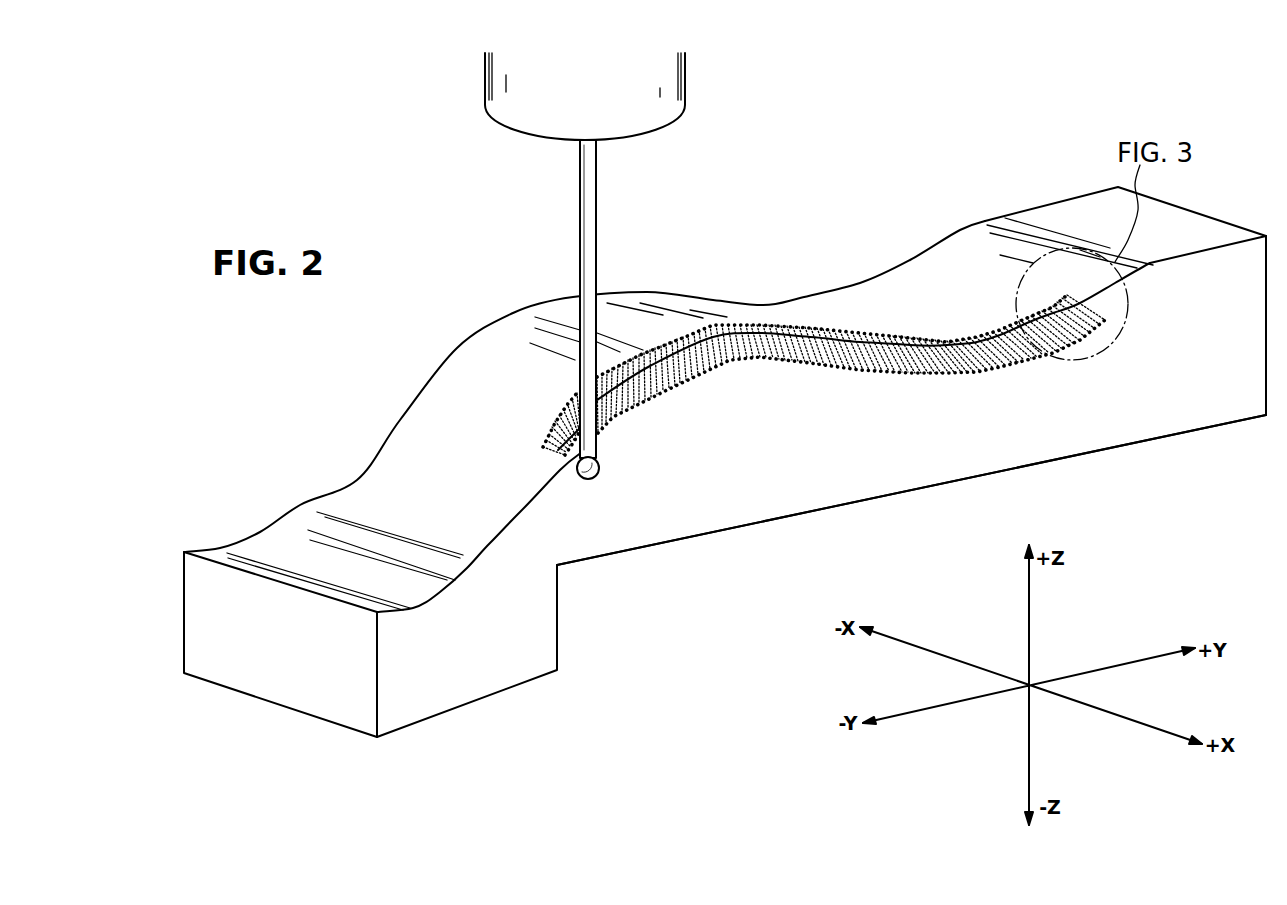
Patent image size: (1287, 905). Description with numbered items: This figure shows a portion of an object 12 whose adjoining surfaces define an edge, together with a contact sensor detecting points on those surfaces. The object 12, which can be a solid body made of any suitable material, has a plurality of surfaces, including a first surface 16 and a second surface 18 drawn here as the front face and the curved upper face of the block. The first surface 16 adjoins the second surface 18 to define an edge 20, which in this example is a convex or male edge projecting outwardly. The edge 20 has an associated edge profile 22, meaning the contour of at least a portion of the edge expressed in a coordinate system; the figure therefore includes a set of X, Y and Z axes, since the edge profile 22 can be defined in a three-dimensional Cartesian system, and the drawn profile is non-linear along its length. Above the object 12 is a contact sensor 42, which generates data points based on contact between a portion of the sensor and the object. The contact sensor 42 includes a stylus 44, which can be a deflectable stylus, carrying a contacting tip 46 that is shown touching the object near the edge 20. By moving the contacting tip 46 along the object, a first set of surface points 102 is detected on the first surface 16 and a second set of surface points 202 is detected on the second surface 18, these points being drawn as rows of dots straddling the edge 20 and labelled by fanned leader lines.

The object 12 is at (1212, 212).
The first surface 16 is at (1193, 392).
The second surface 18 is at (1073, 215).
The edge 20 is at (490, 543).
The edge profile 22 is at (461, 591).
The contact sensor 42 is at (452, 185).
The stylus 44 is at (596, 212).
The contacting tip 46 is at (598, 472).
The first set of surface points 102 is at (942, 373).
The second set of surface points 202 is at (962, 337).